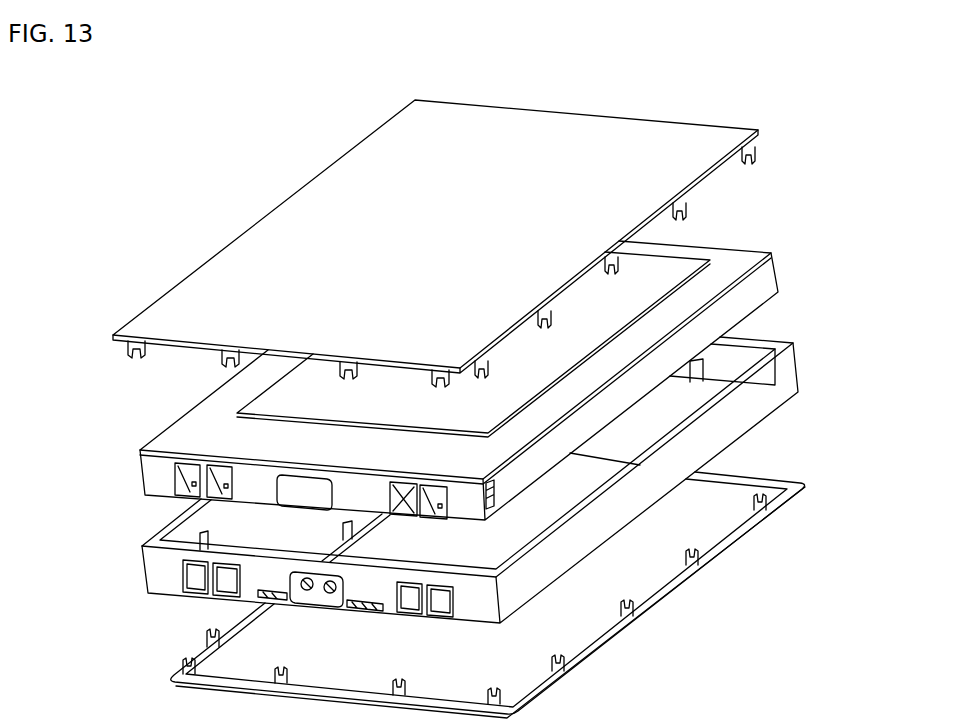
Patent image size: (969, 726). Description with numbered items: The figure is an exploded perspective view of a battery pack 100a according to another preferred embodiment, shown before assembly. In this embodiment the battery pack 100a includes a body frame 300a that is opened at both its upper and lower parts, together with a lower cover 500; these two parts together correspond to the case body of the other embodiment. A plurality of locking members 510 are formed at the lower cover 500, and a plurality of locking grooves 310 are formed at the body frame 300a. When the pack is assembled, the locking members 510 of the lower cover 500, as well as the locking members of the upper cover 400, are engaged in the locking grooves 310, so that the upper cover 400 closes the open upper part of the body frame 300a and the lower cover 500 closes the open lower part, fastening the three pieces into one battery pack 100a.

The battery pack 100a is at (114, 124).
The upper cover 400 is at (680, 152).
The locking grooves 310 is at (773, 334).
The body frame 300a is at (444, 484).
The lower cover 500 is at (550, 595).
The locking members 510 is at (800, 497).